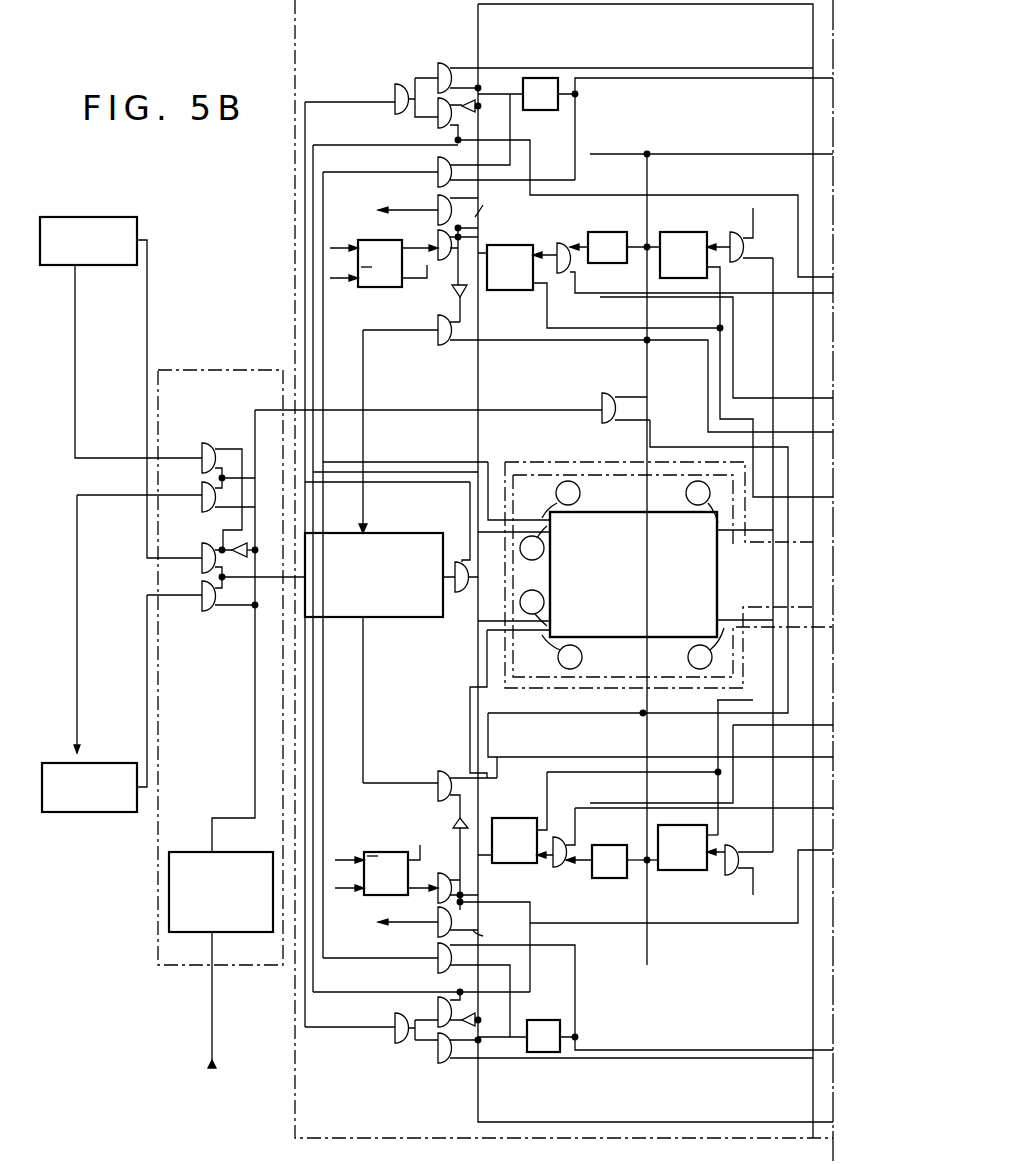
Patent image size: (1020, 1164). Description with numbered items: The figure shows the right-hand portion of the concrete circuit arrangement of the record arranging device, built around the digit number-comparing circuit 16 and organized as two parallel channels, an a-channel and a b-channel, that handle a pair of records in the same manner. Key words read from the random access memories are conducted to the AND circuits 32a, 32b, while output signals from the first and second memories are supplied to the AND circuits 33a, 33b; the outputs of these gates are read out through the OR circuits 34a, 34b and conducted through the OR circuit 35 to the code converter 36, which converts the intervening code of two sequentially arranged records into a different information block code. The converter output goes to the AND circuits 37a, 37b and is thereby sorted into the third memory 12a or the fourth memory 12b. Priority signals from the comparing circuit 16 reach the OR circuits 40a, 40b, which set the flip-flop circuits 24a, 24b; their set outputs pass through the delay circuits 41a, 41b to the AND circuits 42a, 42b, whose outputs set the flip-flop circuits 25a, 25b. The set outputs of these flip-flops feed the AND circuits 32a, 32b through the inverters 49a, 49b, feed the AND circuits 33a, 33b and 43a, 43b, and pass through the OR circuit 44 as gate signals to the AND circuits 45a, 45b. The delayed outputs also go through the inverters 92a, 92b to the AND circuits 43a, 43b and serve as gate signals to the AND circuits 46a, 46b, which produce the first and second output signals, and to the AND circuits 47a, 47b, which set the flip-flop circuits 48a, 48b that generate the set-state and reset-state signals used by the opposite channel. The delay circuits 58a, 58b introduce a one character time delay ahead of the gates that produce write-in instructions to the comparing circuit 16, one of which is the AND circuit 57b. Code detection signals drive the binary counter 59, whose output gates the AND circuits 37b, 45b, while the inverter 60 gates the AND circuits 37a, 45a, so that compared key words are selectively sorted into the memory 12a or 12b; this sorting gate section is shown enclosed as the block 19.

The third memory 12a is at (78, 217).
The fourth memory 12b is at (85, 812).
The gate circuit 19 is at (226, 370).
The binary counter 59 is at (188, 852).
The inverter 60 is at (247, 543).
The AND circuit 45a is at (205, 454).
The AND circuit 45b is at (204, 494).
The AND circuit 37a is at (204, 554).
The AND circuit 37b is at (198, 608).
The code converter 36 is at (391, 534).
The OR circuit 35 is at (449, 550).
The digit number-comparing circuit 16 is at (656, 462).
The OR circuit 44 is at (600, 406).
The OR circuit 34a is at (395, 93).
The AND circuit 33a is at (446, 63).
The AND circuit 32a is at (435, 126).
The inverter 49a is at (482, 106).
The delay circuit 58a is at (542, 74).
The AND circuit 57b is at (438, 169).
The AND circuit 46a is at (438, 204).
The AND circuit 47a is at (440, 236).
The flip-flop circuit 48a is at (370, 287).
The inverter 92a is at (462, 299).
The flip-flop circuit 25a is at (512, 290).
The AND circuit 42a is at (568, 280).
The delay circuit 41a is at (606, 232).
The flip-flop circuit 24a is at (676, 232).
The OR circuit 40a is at (740, 258).
The AND circuit 43a is at (440, 347).
The AND circuit 43b is at (442, 772).
The inverter 92b is at (467, 818).
The flip-flop circuit 25b is at (518, 814).
The AND circuit 42b is at (568, 830).
The delay circuit 41b is at (610, 878).
The flip-flop circuit 24b is at (676, 872).
The OR circuit 40b is at (735, 847).
The flip-flop circuit 48b is at (381, 852).
The AND circuit 47b is at (438, 871).
The AND circuit 46b is at (432, 932).
The delay circuit 58b is at (542, 1054).
The AND circuit 32b is at (435, 1006).
The inverter 49b is at (480, 1028).
The AND circuit 33b is at (436, 1063).
The OR circuit 34b is at (388, 1042).